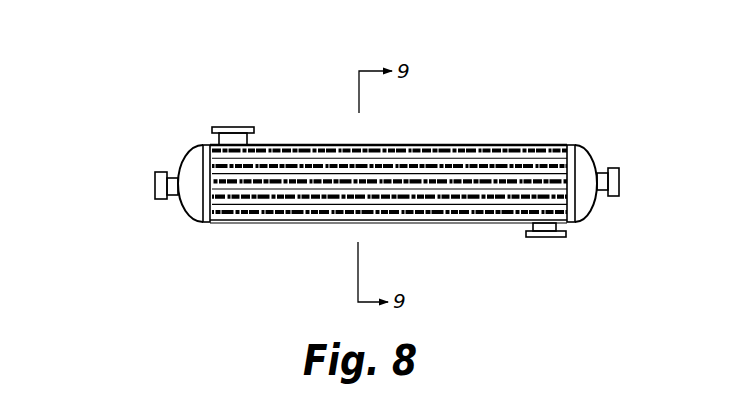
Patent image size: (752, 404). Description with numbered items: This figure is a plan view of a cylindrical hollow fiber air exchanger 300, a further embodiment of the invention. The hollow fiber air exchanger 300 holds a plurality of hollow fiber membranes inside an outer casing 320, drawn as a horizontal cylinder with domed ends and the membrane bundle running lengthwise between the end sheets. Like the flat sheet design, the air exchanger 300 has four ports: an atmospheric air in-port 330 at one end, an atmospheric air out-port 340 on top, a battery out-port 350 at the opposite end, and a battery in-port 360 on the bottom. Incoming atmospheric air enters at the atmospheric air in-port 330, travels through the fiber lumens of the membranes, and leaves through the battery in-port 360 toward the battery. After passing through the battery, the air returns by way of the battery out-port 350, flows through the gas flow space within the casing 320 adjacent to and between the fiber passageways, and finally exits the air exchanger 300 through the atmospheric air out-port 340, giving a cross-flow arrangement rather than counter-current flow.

The cylindrical hollow fiber air exchanger 300 is at (489, 120).
The outer casing 320 is at (317, 215).
The atmospheric air in-port 330 is at (153, 183).
The atmospheric air out-port 340 is at (232, 127).
The battery out-port 350 is at (620, 181).
The battery in-port 360 is at (548, 238).